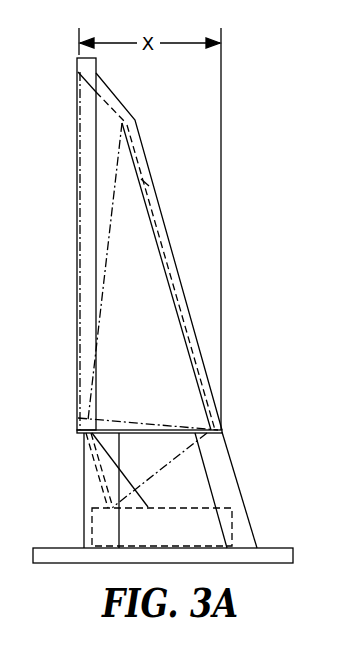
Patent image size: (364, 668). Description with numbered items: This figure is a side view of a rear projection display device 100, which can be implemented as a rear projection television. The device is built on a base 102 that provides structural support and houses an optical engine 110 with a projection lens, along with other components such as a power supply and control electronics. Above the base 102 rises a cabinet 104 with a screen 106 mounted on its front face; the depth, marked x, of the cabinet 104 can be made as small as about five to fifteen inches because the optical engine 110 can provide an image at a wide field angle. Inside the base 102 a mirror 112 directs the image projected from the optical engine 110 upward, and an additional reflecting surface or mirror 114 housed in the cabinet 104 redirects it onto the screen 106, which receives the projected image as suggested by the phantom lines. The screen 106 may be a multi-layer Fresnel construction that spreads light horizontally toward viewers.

The rear projection display device 100 is at (264, 143).
The base 102 is at (233, 468).
The cabinet 104 is at (175, 280).
The screen 106 is at (77, 174).
The optical engine 110 is at (102, 525).
The mirror 112 is at (98, 473).
The reflecting surface or mirror 114 is at (145, 183).